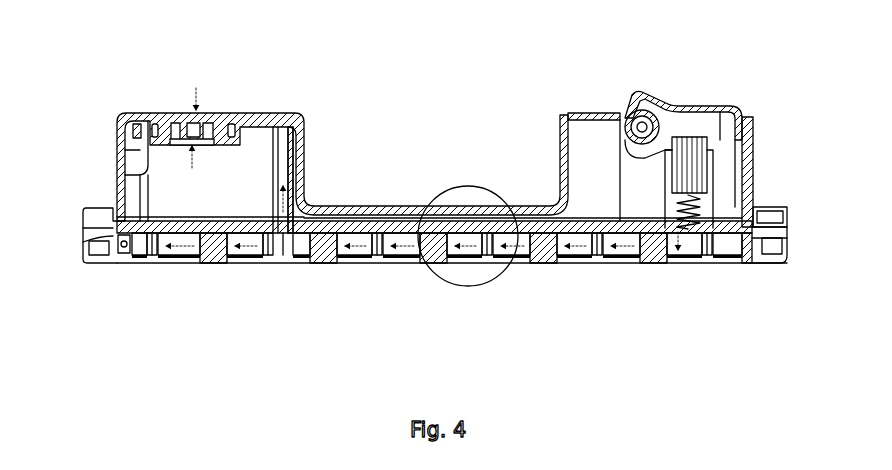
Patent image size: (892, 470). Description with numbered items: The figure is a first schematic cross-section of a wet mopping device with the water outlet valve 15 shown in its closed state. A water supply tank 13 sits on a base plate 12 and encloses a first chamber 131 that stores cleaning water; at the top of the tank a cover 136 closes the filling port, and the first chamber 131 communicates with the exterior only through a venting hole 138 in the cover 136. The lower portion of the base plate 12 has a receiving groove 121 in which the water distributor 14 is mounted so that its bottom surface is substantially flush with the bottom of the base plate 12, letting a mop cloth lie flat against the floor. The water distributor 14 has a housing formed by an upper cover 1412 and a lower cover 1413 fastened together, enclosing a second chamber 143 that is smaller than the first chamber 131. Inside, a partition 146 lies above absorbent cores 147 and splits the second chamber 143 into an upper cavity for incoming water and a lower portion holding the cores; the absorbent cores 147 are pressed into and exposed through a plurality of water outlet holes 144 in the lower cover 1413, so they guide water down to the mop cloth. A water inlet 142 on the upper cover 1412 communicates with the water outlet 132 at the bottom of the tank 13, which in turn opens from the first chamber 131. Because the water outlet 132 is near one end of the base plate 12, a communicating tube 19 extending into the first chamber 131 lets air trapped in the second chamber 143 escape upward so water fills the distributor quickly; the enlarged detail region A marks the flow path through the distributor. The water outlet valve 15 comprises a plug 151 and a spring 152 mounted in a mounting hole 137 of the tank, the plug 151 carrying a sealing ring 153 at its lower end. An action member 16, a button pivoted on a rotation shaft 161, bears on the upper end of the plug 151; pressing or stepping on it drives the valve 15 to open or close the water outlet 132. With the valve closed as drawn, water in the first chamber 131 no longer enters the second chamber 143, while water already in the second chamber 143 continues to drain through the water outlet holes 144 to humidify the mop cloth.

The base plate 12 is at (180, 222).
The water supply tank 13 is at (253, 117).
The water distributor 14 is at (256, 265).
The water outlet valve 15 is at (756, 193).
The action member 16 is at (680, 137).
The communicating tube 19 is at (300, 177).
The receiving groove 121 is at (292, 243).
The first chamber 131 is at (177, 162).
The water outlet 132 is at (657, 220).
The cover 136 is at (168, 120).
The mounting hole 137 is at (627, 158).
The venting hole 138 is at (196, 92).
The water inlet 142 is at (780, 250).
The second chamber 143 is at (172, 243).
The water outlet holes 144 is at (200, 262).
The partition 146 is at (460, 257).
The absorbent cores 147 is at (435, 262).
The plug 151 is at (707, 170).
The spring 152 is at (700, 198).
The sealing ring 153 is at (757, 212).
The rotation shaft 161 is at (632, 120).
The upper cover 1412 is at (113, 224).
The lower cover 1413 is at (398, 257).
The detail region A is at (473, 188).